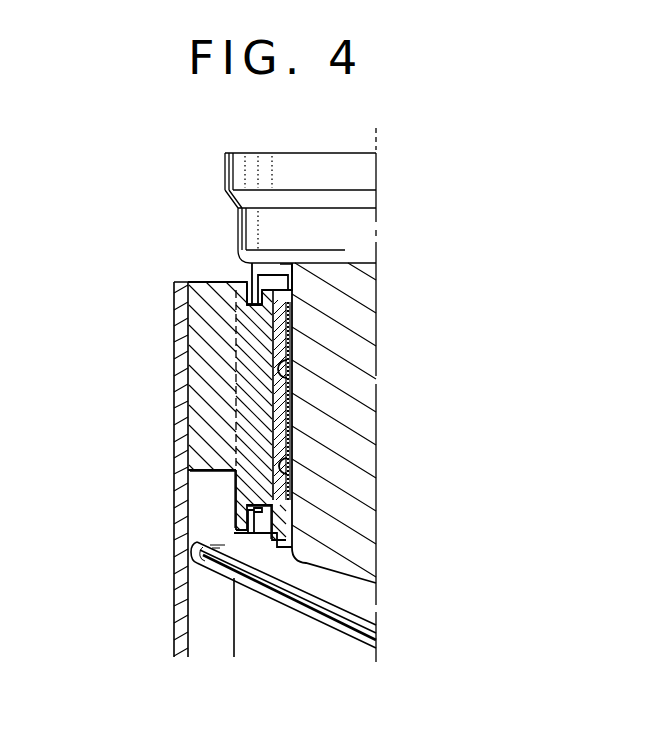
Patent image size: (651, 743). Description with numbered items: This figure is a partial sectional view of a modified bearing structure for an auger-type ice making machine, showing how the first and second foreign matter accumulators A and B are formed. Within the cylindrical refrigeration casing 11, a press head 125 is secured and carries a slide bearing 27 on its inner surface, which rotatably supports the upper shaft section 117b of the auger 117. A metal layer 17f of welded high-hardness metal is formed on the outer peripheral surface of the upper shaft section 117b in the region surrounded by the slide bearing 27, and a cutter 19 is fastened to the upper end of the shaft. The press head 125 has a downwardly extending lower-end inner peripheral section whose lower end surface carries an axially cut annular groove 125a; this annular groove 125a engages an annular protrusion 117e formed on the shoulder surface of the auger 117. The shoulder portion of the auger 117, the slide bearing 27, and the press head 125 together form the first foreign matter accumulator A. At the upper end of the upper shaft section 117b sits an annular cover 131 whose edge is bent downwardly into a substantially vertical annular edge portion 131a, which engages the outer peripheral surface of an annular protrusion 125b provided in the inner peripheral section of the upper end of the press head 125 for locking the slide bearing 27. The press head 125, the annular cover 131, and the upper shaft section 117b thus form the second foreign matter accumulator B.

The cutter 19 is at (228, 174).
The annular cover 131 is at (273, 265).
The second foreign matter accumulator B is at (257, 278).
The annular edge portion 131a is at (247, 290).
The press head 125 is at (200, 340).
The refrigeration casing 11 is at (180, 388).
The first foreign matter accumulator A is at (237, 488).
The annular groove 125a is at (247, 503).
The annular protrusion 117e is at (258, 512).
The annular protrusion 125b is at (280, 281).
The upper shaft section 117b is at (347, 308).
The metal layer 17f is at (290, 347).
The slide bearing 27 is at (290, 397).
The auger 117 is at (350, 648).